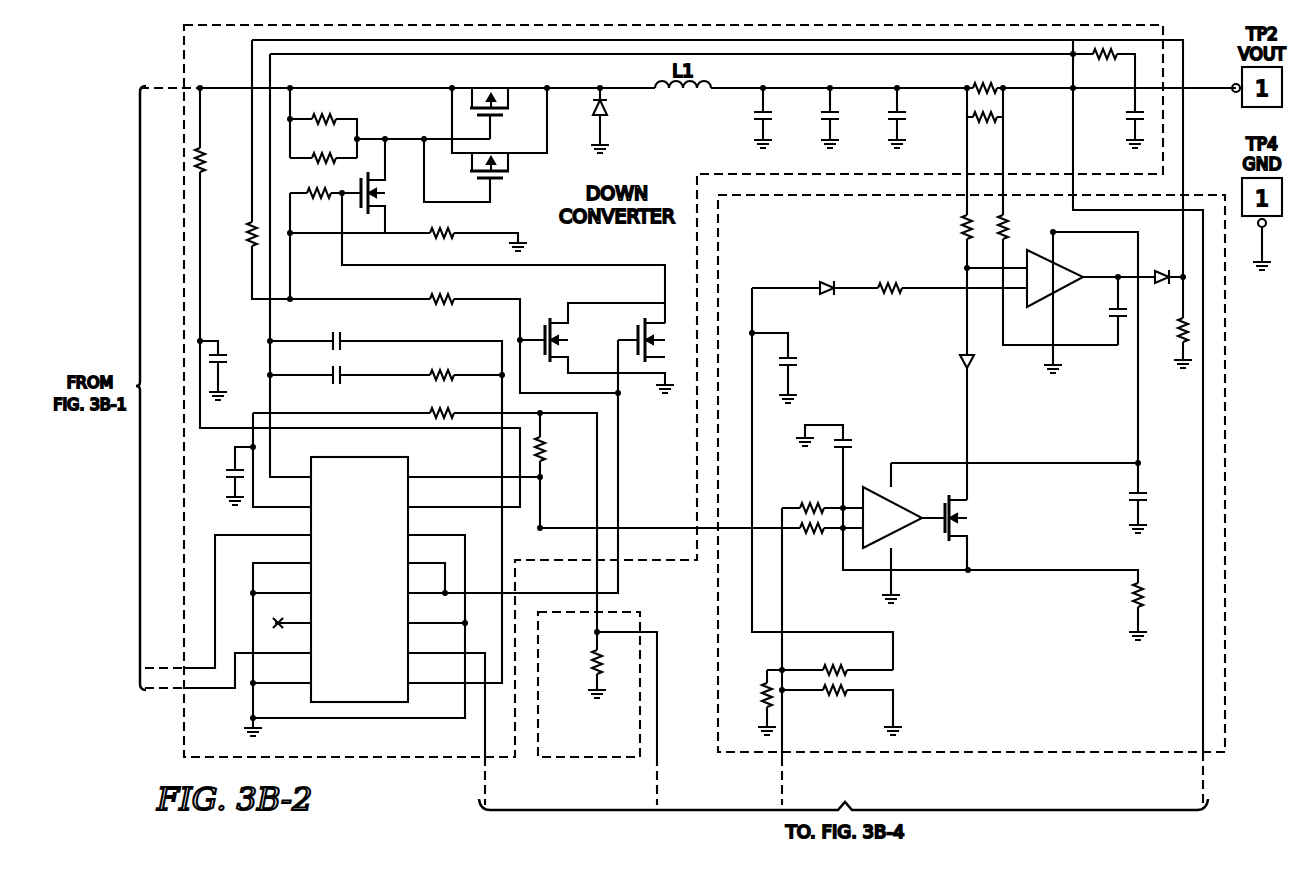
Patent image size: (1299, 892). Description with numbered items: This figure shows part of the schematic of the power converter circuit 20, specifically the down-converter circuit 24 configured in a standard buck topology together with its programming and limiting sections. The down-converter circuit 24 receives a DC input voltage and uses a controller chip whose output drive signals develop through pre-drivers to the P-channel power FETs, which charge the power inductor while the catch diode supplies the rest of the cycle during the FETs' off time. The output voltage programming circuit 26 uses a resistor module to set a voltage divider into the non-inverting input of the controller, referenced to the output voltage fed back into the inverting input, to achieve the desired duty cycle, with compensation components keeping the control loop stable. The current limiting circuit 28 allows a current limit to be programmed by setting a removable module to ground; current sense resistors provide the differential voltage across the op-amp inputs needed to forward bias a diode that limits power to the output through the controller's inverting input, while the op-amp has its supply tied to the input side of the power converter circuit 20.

The power converter circuit 20 is at (108, 90).
The down-converter circuit 24 is at (185, 712).
The output voltage programming circuit 26 is at (632, 612).
The current limiting circuit 28 is at (718, 601).